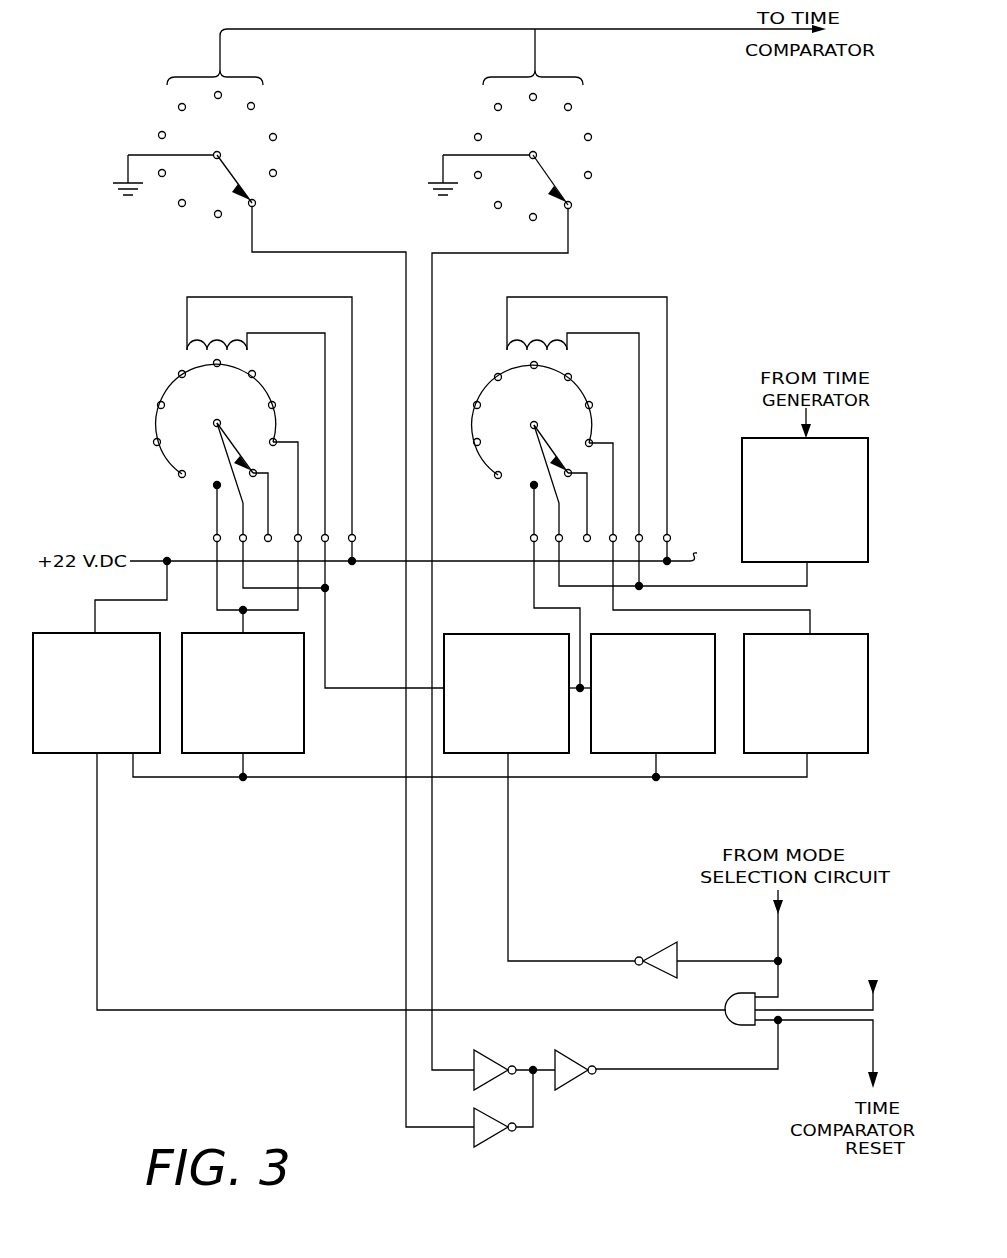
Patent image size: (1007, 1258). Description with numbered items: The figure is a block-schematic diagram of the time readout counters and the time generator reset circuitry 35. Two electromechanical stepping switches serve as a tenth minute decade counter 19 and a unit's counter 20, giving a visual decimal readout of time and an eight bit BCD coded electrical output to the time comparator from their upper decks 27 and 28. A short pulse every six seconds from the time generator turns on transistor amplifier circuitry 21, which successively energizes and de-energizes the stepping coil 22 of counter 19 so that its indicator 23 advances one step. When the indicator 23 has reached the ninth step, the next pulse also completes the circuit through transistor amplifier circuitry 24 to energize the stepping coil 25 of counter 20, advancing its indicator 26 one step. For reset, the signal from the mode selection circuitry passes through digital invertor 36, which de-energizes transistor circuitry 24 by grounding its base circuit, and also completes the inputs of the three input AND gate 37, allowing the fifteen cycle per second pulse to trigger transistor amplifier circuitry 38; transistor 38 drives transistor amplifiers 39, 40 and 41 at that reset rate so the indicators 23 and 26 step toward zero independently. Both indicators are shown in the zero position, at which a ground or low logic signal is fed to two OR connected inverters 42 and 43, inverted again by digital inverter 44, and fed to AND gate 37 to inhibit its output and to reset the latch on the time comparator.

The tenth minute decade counter 19 is at (608, 282).
The unit's counter 20 is at (313, 248).
The transistor amplifier circuitry 21 is at (742, 490).
The stepping coil 22 is at (538, 337).
The indicator 23 is at (548, 446).
The transistor amplifier circuitry 24 is at (549, 756).
The stepping coil 25 is at (215, 337).
The indicator 26 is at (232, 446).
The upper deck 27 is at (597, 155).
The upper deck 28 is at (270, 128).
The time generator reset circuitry 35 is at (652, 944).
The digital invertor 36 is at (658, 972).
The three input AND gate 37 is at (737, 1028).
The transistor amplifier circuitry 38 is at (73, 756).
The transistor amplifier 39 is at (828, 634).
The transistor amplifier 40 is at (690, 756).
The transistor amplifier 41 is at (306, 737).
The inverter 42 is at (487, 1140).
The inverter 43 is at (490, 1058).
The digital inverter 44 is at (577, 1080).